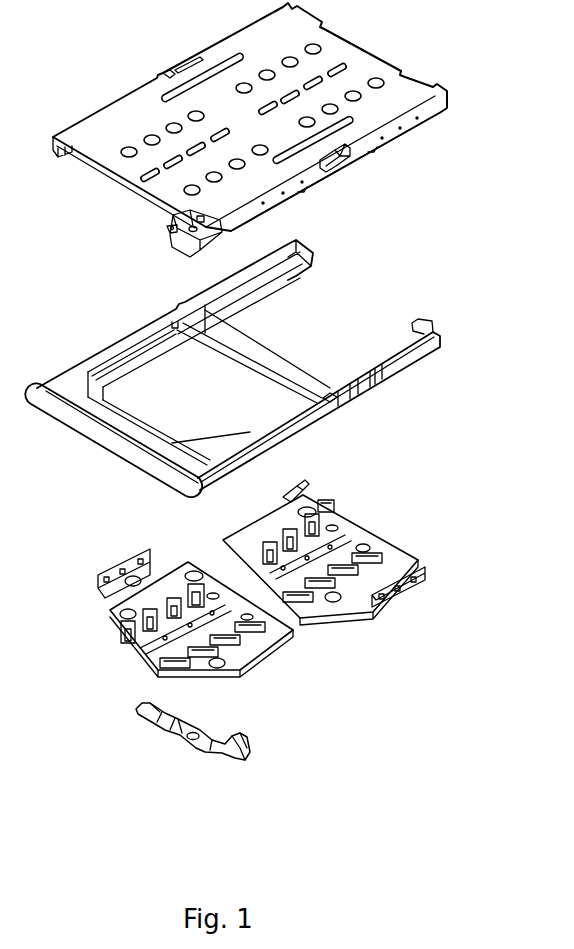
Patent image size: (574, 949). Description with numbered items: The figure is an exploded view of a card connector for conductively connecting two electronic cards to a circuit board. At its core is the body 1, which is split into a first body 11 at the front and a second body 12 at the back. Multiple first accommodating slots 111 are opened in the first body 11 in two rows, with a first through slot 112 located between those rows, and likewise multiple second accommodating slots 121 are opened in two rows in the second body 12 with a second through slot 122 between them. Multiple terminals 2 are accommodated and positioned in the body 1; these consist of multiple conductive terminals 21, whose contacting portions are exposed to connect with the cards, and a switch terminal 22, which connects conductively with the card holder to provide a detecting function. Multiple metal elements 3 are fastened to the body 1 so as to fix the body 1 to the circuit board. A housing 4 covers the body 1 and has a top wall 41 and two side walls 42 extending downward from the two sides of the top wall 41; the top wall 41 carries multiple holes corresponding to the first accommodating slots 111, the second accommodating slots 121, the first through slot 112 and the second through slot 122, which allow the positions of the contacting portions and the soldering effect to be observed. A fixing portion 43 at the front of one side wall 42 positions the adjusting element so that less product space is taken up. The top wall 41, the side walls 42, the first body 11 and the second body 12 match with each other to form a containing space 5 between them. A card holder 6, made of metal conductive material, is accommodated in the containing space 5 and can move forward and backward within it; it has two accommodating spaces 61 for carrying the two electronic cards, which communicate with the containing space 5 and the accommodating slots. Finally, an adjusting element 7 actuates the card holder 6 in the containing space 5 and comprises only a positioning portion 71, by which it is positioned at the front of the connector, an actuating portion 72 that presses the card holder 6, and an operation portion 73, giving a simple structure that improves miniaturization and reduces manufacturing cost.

The body 1 is at (262, 565).
The first body 11 is at (182, 636).
The first accommodating slots 111 is at (192, 663).
The first through slot 112 is at (160, 648).
The second body 12 is at (337, 593).
The second accommodating slots 121 is at (339, 601).
The second through slot 122 is at (283, 578).
The terminals 2 is at (303, 565).
The conductive terminals 21 is at (233, 643).
The switch terminal 22 is at (297, 480).
The metal elements 3 is at (118, 588).
The housing 4 is at (244, 130).
The top wall 41 is at (130, 107).
The side walls 42 is at (358, 152).
The fixing portion 43 is at (173, 232).
The containing space 5 is at (83, 163).
The card holder 6 is at (235, 368).
The accommodating spaces 61 is at (255, 330).
The adjusting element 7 is at (174, 756).
The positioning portion 71 is at (185, 733).
The actuating portion 72 is at (147, 717).
The operation portion 73 is at (223, 750).